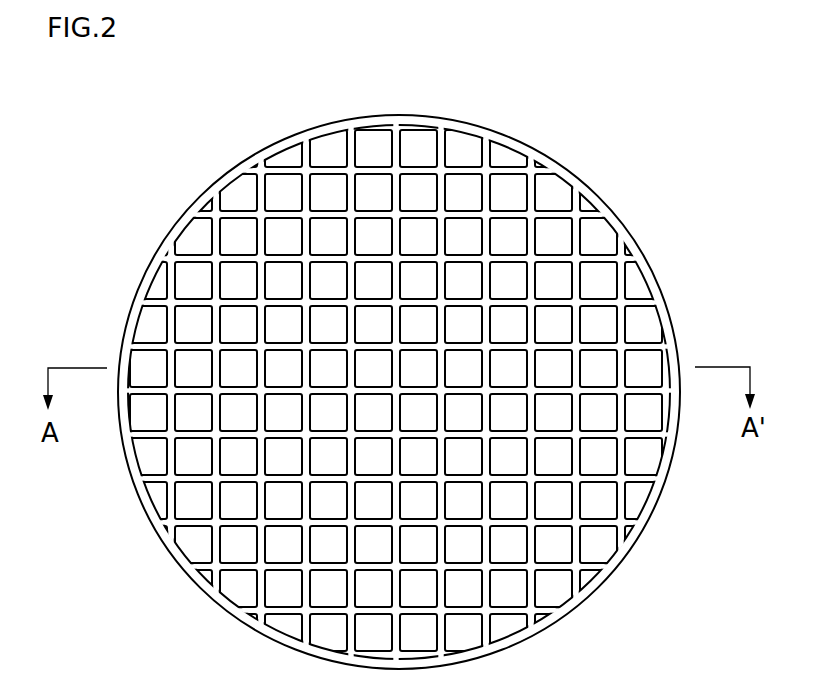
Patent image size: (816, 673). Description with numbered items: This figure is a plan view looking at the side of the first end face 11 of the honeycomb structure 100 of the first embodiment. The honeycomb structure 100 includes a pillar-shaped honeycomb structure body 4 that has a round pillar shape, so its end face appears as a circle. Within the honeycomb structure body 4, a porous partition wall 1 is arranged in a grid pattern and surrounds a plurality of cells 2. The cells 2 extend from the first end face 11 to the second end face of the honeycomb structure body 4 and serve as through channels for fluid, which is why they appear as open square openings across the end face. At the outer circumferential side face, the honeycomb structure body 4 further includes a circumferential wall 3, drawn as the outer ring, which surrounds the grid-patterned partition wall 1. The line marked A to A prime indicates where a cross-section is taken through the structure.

The honeycomb structure 100 is at (745, 82).
The first end face 11 is at (444, 380).
The partition wall 1 is at (503, 213).
The cells 2 is at (552, 233).
The circumferential wall 3 is at (618, 558).
The honeycomb structure body 4 is at (693, 338).